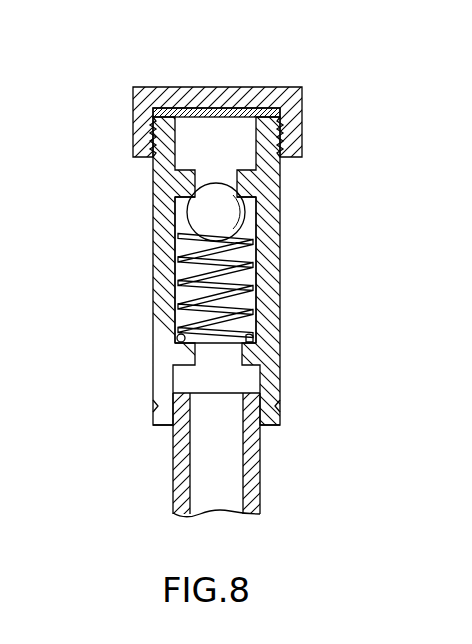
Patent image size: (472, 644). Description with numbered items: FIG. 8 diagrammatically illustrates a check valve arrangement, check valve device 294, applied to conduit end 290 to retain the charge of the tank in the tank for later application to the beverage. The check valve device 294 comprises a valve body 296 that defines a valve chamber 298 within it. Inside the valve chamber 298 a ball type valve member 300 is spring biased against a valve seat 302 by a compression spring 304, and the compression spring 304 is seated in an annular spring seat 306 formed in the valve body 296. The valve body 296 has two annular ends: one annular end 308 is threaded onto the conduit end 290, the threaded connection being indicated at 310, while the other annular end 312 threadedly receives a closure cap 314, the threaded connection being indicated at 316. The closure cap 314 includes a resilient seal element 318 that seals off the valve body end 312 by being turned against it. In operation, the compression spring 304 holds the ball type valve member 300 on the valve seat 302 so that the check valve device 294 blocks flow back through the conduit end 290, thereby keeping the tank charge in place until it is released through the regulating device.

The conduit end 290 is at (260, 480).
The check valve device 294 is at (236, 277).
The valve body 296 is at (272, 303).
The valve chamber 298 is at (246, 277).
The ball type valve member 300 is at (243, 218).
The valve seat 302 is at (240, 188).
The compression spring 304 is at (177, 267).
The annular spring seat 306 is at (252, 333).
The annular end 308 is at (280, 422).
The threaded connection 310 is at (262, 403).
The annular end 312 is at (263, 130).
The closure cap 314 is at (250, 93).
The threaded connection 316 is at (153, 132).
The resilient seal element 318 is at (203, 108).